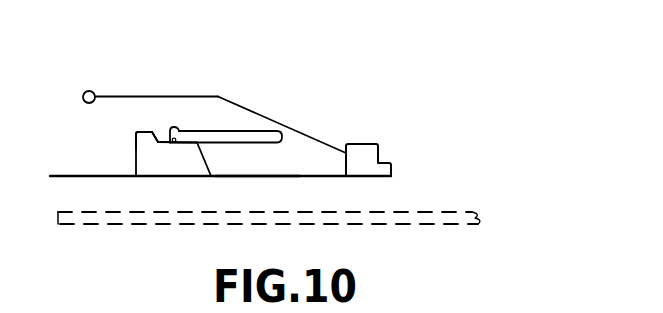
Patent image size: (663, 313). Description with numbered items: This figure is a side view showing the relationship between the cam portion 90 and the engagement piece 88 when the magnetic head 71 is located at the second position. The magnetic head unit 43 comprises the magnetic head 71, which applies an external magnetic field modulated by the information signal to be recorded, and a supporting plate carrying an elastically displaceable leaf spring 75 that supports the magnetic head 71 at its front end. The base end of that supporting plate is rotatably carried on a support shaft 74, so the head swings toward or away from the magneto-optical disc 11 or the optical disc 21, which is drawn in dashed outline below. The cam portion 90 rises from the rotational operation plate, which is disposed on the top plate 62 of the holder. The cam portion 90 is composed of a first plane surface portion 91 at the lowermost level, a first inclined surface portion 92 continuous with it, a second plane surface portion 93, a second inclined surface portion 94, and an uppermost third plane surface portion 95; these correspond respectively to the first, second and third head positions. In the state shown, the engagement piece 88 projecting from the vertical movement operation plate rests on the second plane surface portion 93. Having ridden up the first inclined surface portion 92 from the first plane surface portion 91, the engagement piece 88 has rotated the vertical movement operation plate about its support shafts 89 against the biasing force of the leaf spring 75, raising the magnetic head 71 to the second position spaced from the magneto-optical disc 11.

The magnetic head unit 43 is at (201, 74).
The support shaft 74 is at (87, 91).
The leaf spring 75 is at (276, 122).
The magnetic head 71 is at (373, 160).
The top plate 62 is at (278, 177).
The first plane surface portion 91 is at (248, 175).
The cam portion 90 is at (148, 137).
The third plane surface portion 95 is at (140, 131).
The second inclined surface portion 94 is at (160, 139).
The second plane surface portion 93 is at (172, 143).
The first inclined surface portion 92 is at (205, 160).
The engagement piece 88 is at (219, 134).
The support shafts 89 is at (175, 127).
The magneto-optical disc 11 is at (304, 224).
The optical disc 21 is at (482, 218).